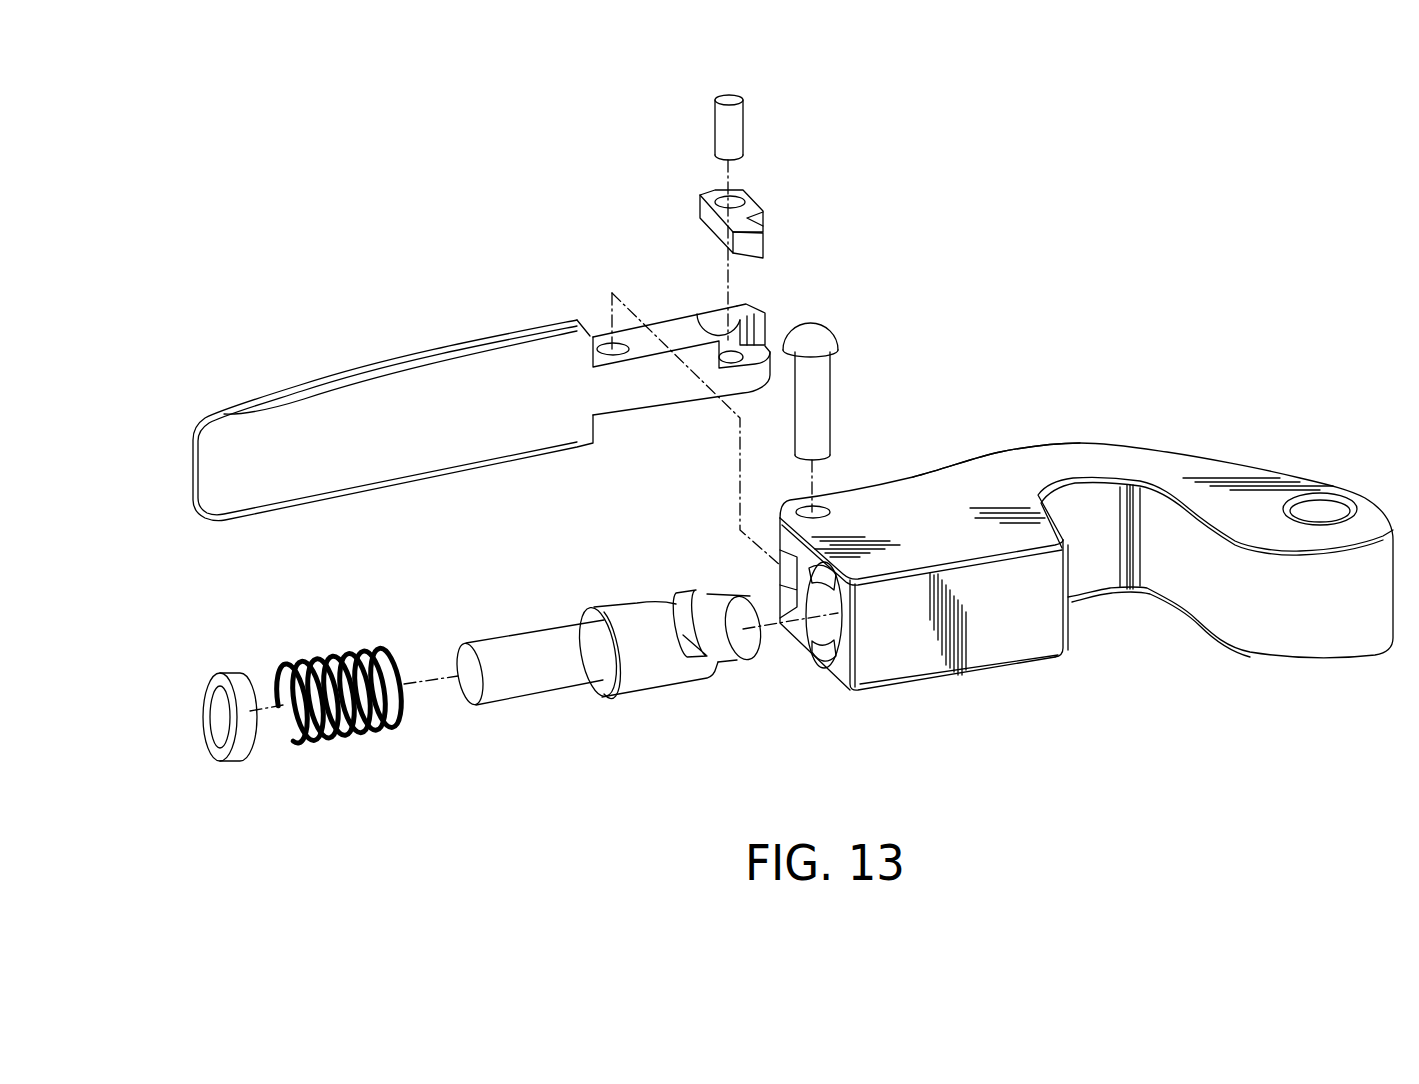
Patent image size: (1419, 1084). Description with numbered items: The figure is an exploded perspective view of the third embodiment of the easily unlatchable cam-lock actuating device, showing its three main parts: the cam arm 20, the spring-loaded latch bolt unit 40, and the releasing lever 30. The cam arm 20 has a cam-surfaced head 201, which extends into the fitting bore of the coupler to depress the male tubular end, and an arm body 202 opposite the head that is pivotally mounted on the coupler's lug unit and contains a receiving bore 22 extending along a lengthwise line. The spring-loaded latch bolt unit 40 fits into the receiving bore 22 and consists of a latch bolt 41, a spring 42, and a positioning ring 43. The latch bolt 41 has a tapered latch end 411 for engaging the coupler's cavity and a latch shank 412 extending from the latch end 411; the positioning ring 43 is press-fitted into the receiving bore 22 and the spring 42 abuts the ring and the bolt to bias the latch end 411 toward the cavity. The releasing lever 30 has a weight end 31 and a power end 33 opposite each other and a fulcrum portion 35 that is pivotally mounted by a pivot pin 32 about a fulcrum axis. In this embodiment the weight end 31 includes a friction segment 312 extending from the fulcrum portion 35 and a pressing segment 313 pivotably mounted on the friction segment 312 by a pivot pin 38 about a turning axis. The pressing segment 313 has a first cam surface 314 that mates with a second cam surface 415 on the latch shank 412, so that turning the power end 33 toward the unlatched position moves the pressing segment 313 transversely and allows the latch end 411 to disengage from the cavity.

The cam arm 20 is at (1073, 420).
The cam-surfaced head 201 is at (1277, 488).
The arm body 202 is at (979, 466).
The receiving bore 22 is at (828, 648).
The releasing lever 30 is at (381, 338).
The weight end 31 is at (581, 205).
The friction segment 312 is at (683, 328).
The pressing segment 313 is at (712, 228).
The first cam surface 314 is at (755, 248).
The pivot pin 32 is at (820, 400).
The power end 33 is at (205, 472).
The fulcrum portion 35 is at (607, 357).
The pivot pin 38 is at (735, 130).
The spring-loaded latch bolt unit 40 is at (482, 724).
The latch bolt 41 is at (522, 684).
The latch end 411 is at (743, 662).
The latch shank 412 is at (654, 682).
The second cam surface 415 is at (652, 594).
The spring 42 is at (367, 729).
The positioning ring 43 is at (245, 753).